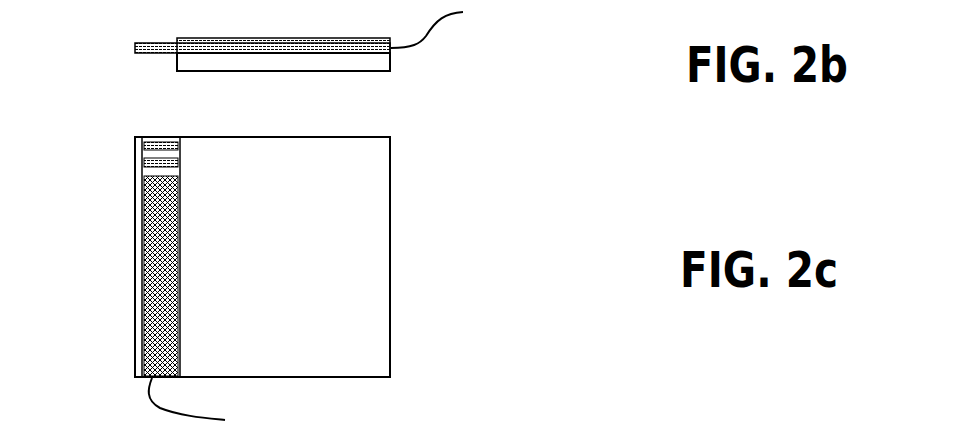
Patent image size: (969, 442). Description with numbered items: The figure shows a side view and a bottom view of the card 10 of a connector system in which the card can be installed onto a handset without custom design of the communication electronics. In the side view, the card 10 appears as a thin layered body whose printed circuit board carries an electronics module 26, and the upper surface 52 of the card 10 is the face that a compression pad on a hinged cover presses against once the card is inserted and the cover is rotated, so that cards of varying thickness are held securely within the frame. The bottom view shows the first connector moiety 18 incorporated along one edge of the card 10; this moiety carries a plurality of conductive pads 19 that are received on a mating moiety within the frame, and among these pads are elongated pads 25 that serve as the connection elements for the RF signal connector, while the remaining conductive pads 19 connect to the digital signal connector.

In FIG. 2b, the card 10 is at (452, 51).
In FIG. 2c, the card 10 is at (432, 249).
In FIG. 2c, the first connector moiety 18 is at (135, 292).
In FIG. 2c, the conductive pads 19 is at (140, 190).
In FIG. 2c, the elongated pads 25 is at (152, 140).
In FIG. 2b, the electronics module 26 is at (391, 62).
In FIG. 2c, the electronics module 26 is at (360, 325).
In FIG. 2b, the upper surface 52 is at (253, 39).